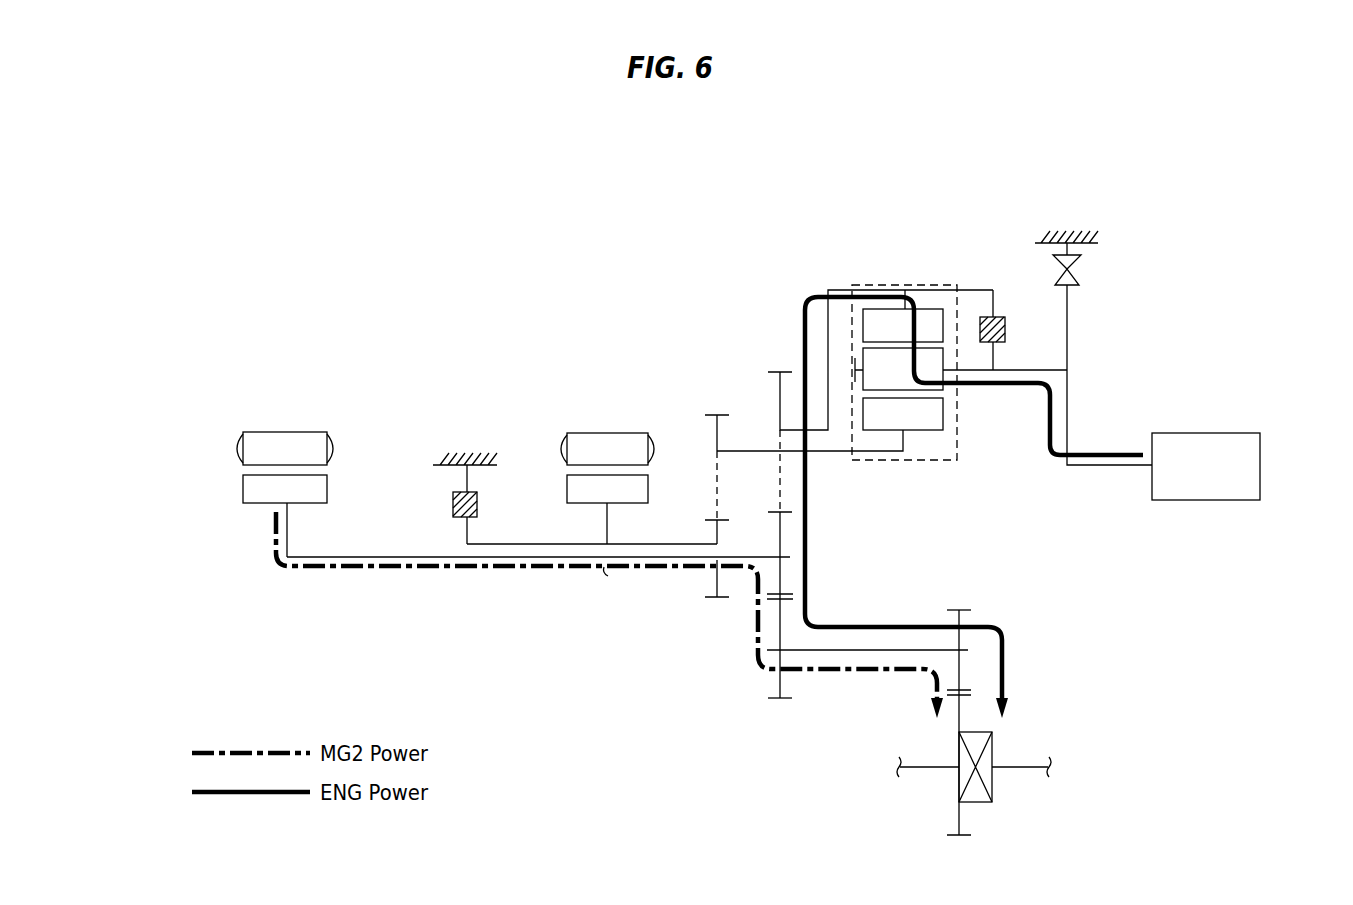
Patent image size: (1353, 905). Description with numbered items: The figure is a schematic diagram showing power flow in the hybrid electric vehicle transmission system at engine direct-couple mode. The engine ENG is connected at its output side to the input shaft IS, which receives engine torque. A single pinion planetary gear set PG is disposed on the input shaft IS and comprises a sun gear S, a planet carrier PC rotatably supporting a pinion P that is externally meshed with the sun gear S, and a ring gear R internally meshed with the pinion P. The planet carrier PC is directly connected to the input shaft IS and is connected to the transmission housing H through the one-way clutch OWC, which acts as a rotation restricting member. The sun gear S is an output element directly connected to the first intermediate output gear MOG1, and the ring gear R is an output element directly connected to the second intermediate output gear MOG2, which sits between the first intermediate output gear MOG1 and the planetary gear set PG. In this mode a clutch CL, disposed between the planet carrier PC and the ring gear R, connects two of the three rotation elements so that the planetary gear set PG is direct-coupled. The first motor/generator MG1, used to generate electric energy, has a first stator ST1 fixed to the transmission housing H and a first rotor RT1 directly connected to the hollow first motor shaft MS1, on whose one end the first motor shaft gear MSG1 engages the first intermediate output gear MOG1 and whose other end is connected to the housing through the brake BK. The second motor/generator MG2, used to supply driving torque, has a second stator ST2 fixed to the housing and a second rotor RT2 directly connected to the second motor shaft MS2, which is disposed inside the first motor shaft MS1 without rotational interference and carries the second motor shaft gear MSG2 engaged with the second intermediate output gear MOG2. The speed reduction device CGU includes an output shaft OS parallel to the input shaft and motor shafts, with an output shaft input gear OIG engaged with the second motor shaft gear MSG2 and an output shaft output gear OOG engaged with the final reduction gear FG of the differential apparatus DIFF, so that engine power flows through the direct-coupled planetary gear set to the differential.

The second motor/generator MG2 is at (272, 446).
The second stator ST2 is at (285, 448).
The second rotor RT2 is at (285, 516).
The first motor/generator MG1 is at (592, 442).
The first stator ST1 is at (607, 449).
The first rotor RT1 is at (607, 509).
The transmission housing H is at (438, 456).
The brake BK is at (438, 512).
The first motor shaft MS1 is at (667, 544).
The second motor shaft MS2 is at (512, 567).
The first intermediate output gear MOG1 is at (714, 436).
The second intermediate output gear MOG2 is at (778, 391).
The first motor shaft gear MSG1 is at (718, 529).
The second motor shaft gear MSG2 is at (782, 540).
The output shaft input gear OIG is at (770, 623).
The speed reduction device CGU is at (748, 688).
The output shaft OS is at (863, 651).
The output shaft output gear OOG is at (961, 618).
The final reduction gear FG is at (961, 721).
The differential apparatus DIFF is at (990, 752).
The planetary gear set PG is at (904, 330).
The ring gear R is at (903, 325).
The pinion P is at (899, 369).
The sun gear S is at (903, 414).
The clutch CL is at (1024, 330).
The planet carrier PC is at (1043, 371).
The one-way clutch OWC is at (1099, 266).
The input shaft IS is at (1097, 467).
The engine ENG is at (1206, 466).